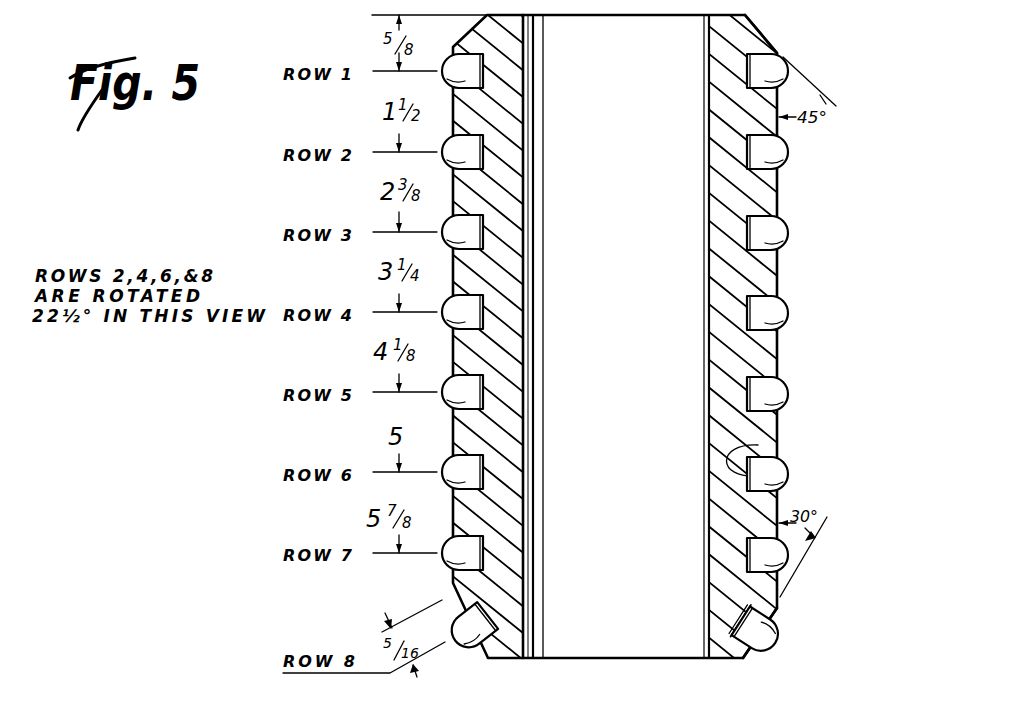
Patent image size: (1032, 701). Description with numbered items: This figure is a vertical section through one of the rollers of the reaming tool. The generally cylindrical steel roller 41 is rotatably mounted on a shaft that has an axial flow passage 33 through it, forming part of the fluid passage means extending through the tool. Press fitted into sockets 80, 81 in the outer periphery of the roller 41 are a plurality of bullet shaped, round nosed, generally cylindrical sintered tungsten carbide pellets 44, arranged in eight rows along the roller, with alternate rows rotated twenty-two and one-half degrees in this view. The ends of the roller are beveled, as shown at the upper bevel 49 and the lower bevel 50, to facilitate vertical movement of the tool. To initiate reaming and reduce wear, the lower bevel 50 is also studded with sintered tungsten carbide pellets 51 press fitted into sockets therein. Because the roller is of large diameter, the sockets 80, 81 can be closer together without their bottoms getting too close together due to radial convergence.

The axial flow passage 33 is at (704, 107).
The roller 41 is at (756, 357).
The pellet 44 is at (780, 223).
The upper bevel 49 is at (765, 33).
The lower bevel 50 is at (743, 652).
The bevel pellet 51 is at (768, 631).
The socket 80 is at (750, 443).
The socket 81 is at (740, 628).